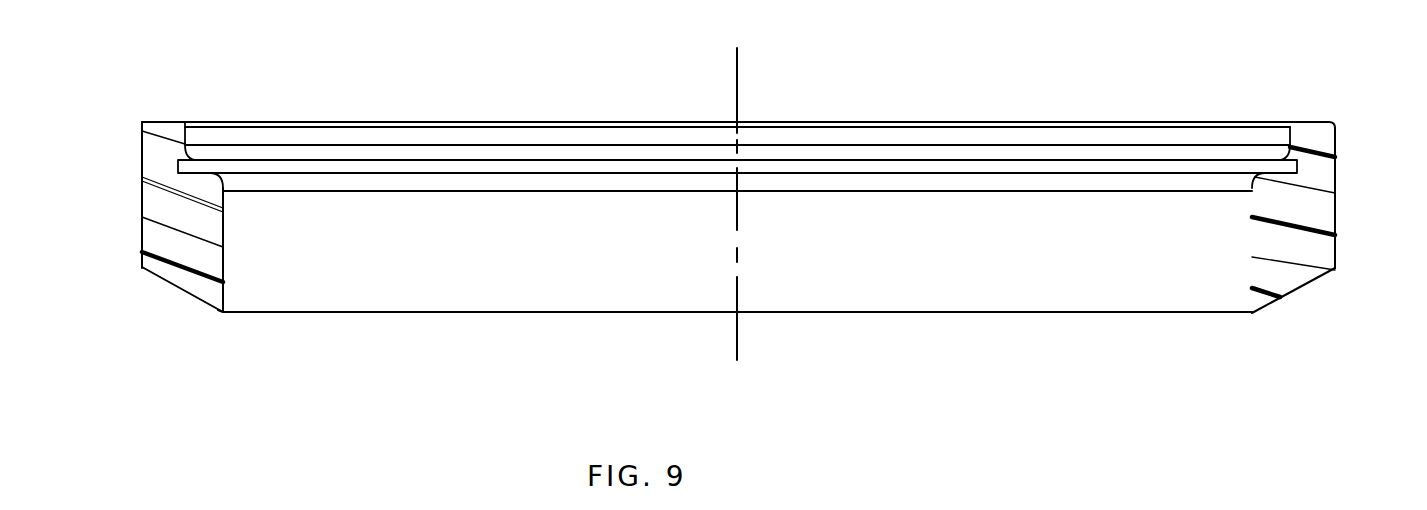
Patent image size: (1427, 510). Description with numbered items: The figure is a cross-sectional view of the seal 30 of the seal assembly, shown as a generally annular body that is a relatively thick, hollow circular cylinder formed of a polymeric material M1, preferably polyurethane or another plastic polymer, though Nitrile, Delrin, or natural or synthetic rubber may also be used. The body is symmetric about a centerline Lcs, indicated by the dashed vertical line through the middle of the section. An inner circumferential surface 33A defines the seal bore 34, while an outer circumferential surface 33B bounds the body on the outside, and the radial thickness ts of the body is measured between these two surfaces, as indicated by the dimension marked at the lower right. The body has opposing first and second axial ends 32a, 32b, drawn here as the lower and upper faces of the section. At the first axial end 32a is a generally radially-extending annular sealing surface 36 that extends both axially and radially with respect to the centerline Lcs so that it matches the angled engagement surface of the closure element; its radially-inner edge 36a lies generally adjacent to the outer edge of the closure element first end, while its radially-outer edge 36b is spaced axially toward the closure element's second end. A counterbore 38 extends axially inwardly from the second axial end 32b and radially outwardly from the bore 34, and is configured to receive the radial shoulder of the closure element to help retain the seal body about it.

The outer seal 30 is at (160, 82).
The first axial end 32a is at (321, 314).
The second axial end 32b is at (296, 121).
The inner circumferential surface 33A is at (224, 238).
The outer circumferential surface 33B is at (141, 205).
The seal bore 34 is at (478, 273).
The sealing surface 36 is at (178, 290).
The radially-inner edge 36a is at (223, 314).
The radially-outer edge 36b is at (142, 268).
The counterbore 38 is at (1290, 147).
The polymeric material M1 is at (1305, 212).
The radial thickness ts is at (1253, 365).
The centerline Lcs is at (738, 62).